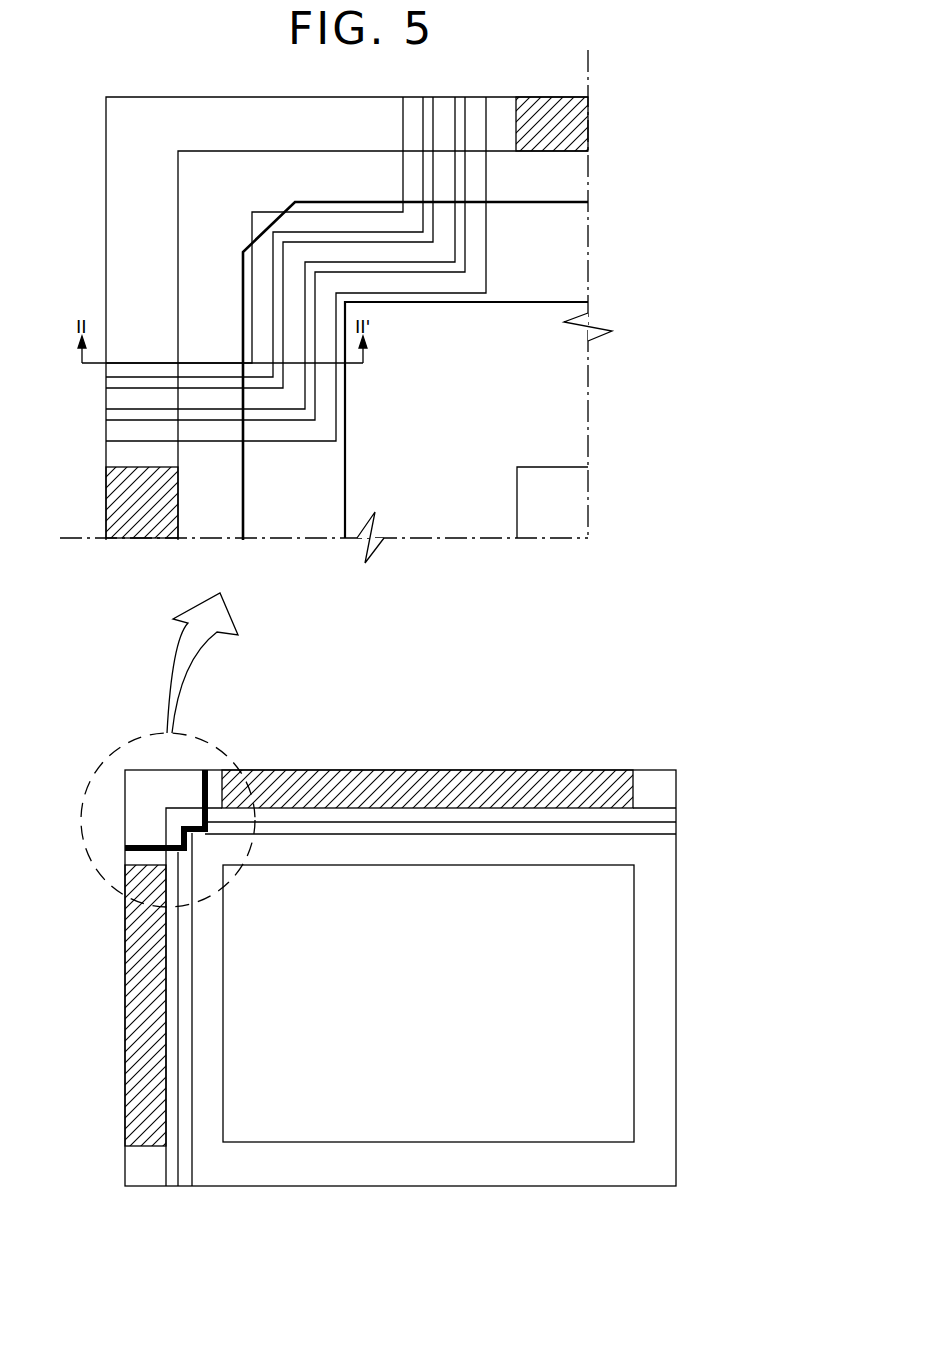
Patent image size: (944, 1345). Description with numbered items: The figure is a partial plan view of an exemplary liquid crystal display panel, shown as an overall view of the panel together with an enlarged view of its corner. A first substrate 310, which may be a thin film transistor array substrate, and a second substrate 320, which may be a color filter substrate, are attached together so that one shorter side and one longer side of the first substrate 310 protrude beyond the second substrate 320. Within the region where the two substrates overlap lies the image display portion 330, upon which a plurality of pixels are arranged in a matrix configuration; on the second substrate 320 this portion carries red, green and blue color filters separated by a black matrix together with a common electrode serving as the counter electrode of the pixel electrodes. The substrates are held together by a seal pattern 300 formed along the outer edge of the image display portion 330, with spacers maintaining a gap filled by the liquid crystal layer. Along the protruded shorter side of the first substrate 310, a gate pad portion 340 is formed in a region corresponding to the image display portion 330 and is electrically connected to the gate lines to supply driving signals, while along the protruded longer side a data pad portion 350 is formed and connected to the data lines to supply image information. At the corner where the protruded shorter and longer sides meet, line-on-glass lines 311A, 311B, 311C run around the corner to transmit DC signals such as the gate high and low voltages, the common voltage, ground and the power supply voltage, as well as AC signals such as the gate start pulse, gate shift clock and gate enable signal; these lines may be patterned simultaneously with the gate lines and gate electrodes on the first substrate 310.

The seal pattern 300 is at (295, 540).
The first substrate 310 is at (120, 1243).
The line-on-glass line 311A is at (347, 459).
The line-on-glass line 311B is at (347, 465).
The line-on-glass line 311C is at (252, 272).
The second substrate 320 is at (208, 540).
The image display portion 330 is at (571, 511).
The gate pad portion 340 is at (128, 540).
The data pad portion 350 is at (543, 103).